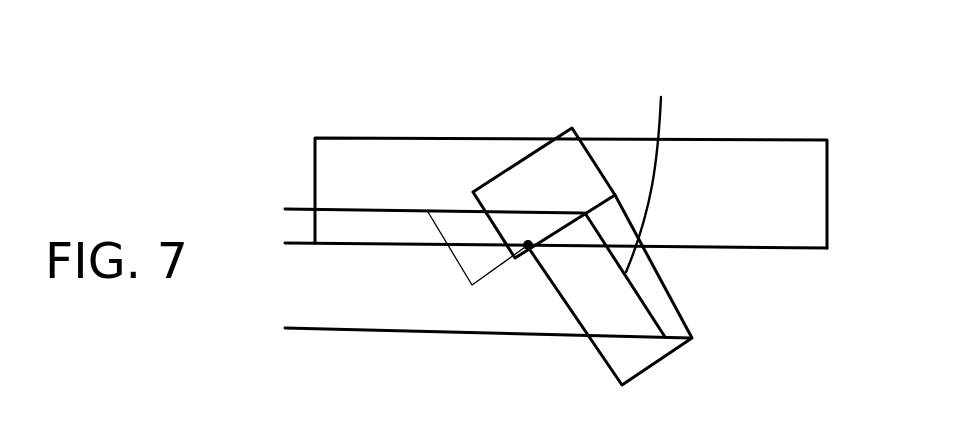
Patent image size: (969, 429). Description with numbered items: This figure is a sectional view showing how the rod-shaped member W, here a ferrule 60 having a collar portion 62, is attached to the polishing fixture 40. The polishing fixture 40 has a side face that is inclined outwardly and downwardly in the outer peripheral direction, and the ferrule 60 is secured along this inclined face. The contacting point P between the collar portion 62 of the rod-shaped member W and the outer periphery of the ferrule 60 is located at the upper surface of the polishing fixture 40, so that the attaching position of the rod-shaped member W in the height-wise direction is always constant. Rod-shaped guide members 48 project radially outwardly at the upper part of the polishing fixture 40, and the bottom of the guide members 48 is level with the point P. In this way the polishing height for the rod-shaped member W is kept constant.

The polishing fixture 40 is at (277, 163).
The rod-shaped guide members 48 is at (737, 155).
The ferrule 60 is at (697, 340).
The collar portion 62 is at (560, 182).
The contacting point P is at (528, 245).
The rod-shaped member W is at (647, 170).